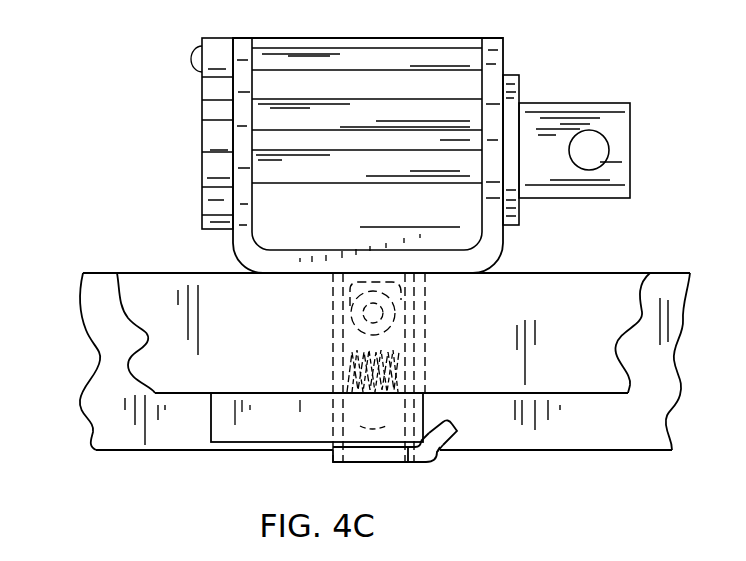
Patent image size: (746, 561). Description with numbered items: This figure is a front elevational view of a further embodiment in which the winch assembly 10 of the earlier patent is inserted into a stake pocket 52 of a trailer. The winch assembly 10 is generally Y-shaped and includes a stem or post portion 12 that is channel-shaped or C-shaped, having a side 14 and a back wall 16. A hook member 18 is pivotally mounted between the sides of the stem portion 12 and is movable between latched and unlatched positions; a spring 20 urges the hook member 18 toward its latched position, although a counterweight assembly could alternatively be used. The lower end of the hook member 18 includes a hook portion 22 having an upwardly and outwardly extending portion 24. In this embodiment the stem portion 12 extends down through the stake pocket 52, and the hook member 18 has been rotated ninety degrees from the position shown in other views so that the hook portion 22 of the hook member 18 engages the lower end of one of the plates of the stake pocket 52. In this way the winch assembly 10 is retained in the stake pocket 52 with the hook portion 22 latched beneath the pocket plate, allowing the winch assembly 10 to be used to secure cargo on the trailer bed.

The winch assembly 10 is at (545, 68).
The stem portion 12 is at (360, 457).
The side 14 is at (372, 412).
The back wall 16 is at (333, 451).
The hook member 18 is at (438, 470).
The spring 20 is at (395, 360).
The hook portion 22 is at (437, 451).
The upwardly and outwardly extending portion 24 is at (443, 451).
The stake pocket 52 is at (205, 418).